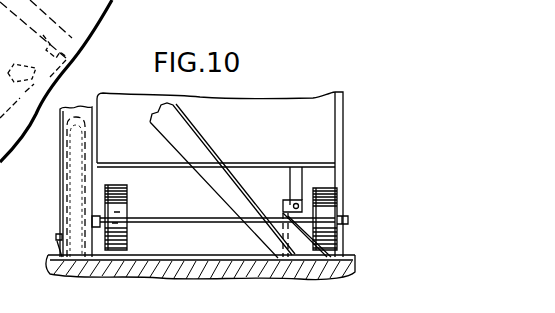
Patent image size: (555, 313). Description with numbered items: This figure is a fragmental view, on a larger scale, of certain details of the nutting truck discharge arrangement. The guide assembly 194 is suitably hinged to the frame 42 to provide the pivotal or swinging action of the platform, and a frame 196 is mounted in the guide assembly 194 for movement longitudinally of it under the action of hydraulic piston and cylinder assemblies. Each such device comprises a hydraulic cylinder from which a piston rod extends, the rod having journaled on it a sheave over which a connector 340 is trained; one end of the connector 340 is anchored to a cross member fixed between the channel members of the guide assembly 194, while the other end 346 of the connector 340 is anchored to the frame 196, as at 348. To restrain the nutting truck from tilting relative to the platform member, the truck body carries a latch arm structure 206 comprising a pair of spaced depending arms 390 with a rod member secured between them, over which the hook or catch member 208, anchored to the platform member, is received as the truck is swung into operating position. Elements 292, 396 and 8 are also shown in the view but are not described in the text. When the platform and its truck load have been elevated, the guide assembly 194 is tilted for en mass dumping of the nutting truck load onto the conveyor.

The guide assembly 194 is at (81, 99).
The frame 196 is at (203, 118).
The latch arm structure 206 is at (303, 165).
The right post 292 is at (333, 93).
The bracket foot 396 is at (286, 205).
The depending arms 390 is at (300, 167).
The connector 340 is at (58, 162).
The frame 42 is at (58, 218).
The pin 8 is at (57, 238).
The other end of connector 346 is at (88, 243).
The catch member 208 is at (280, 228).
The anchorage of connector end to frame 348 is at (90, 257).